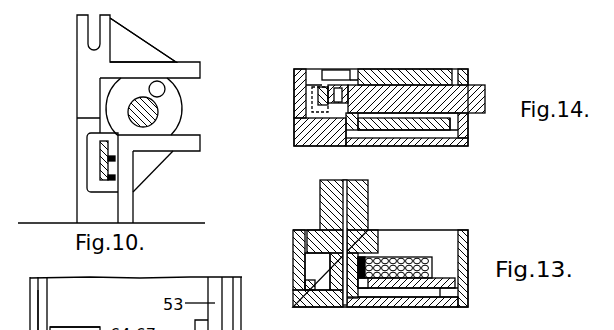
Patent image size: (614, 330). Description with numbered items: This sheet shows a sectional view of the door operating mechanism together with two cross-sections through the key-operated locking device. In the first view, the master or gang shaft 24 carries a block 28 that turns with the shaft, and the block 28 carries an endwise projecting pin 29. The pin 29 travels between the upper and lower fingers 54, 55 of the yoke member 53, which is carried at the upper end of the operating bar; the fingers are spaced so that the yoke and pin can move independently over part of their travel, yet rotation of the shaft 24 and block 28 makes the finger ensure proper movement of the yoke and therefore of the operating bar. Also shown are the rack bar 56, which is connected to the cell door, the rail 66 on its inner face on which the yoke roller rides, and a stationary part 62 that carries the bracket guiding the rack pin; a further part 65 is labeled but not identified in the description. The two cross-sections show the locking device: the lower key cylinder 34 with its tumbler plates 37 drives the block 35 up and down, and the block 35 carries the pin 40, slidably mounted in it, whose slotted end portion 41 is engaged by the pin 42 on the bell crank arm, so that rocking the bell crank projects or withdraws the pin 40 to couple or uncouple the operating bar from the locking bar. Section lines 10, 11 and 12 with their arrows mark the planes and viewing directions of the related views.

In FIG. 10, the yoke member 53 is at (155, 42).
In FIG. 10, the upper finger 54 is at (190, 70).
In FIG. 10, the pin 29 is at (165, 89).
In FIG. 10, the master or gang shaft 24 is at (158, 113).
In FIG. 10, the block 28 is at (172, 125).
In FIG. 10, the lower finger 55 is at (190, 151).
In FIG. 10, the rack bar 56 is at (100, 160).
In FIG. 10, the rail 66 is at (100, 148).
In FIG. 10, the stationary part 62 is at (44, 322).
In FIG. 10, the plate 65 is at (85, 325).
In FIG. 14, the block 35 is at (410, 75).
In FIG. 14, the pin 40 is at (486, 99).
In FIG. 14, the pin 42 is at (341, 92).
In FIG. 14, the slotted end portion 41 is at (318, 100).
In FIG. 13, the lower key cylinder 34 is at (322, 205).
In FIG. 13, the tumbler plates 37 is at (399, 258).
In FIG. 13, the section line 10 is at (283, 317).
In FIG. 14, the section line 11 is at (290, 69).
In FIG. 13, the section line 11 is at (288, 231).
In FIG. 14, the section line 12 is at (457, 69).
In FIG. 13, the section line 12 is at (473, 216).